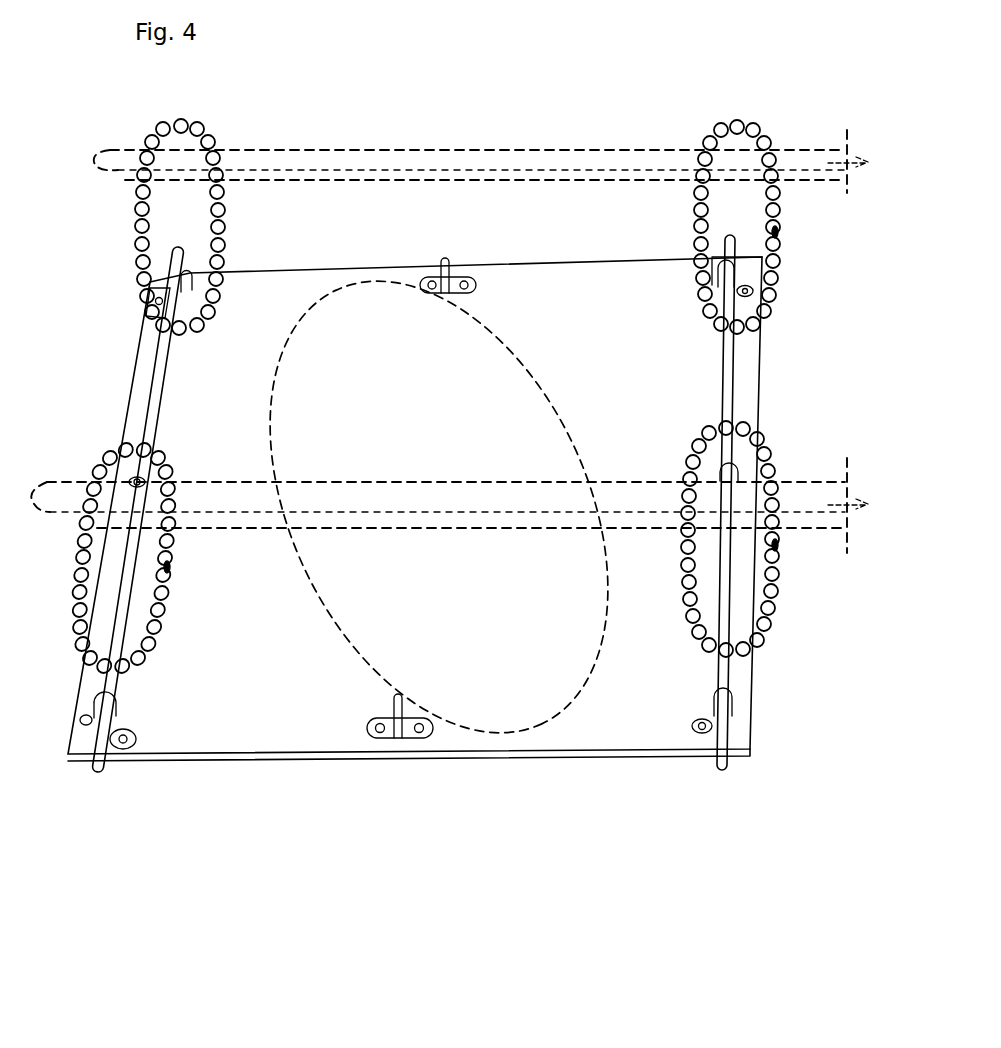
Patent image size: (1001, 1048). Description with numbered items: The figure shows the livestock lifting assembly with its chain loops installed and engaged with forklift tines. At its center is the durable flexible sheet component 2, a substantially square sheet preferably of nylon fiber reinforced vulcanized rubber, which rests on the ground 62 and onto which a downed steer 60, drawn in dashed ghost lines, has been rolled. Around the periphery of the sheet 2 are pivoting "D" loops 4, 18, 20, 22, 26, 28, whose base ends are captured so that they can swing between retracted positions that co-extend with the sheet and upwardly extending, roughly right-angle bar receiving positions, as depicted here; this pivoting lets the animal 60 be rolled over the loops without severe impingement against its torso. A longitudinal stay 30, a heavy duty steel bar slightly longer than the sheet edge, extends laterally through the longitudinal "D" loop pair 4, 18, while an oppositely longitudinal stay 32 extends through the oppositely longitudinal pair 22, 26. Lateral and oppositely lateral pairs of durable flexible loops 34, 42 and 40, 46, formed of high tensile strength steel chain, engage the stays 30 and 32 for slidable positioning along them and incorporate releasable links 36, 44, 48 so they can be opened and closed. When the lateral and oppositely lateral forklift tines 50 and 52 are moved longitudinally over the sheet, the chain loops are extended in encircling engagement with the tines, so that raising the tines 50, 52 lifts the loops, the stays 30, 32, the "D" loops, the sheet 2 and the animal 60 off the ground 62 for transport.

The durable flexible sheet component 2 is at (312, 688).
The "D" loop 4 is at (110, 757).
The "D" loop 18 is at (192, 283).
The "D" loop 20 is at (470, 266).
The "D" loop 22 is at (773, 272).
The "D" loop 26 is at (735, 690).
The "D" loop 28 is at (432, 734).
The longitudinal stay 30 is at (108, 758).
The oppositely longitudinal stay 32 is at (740, 363).
The durable flexible loop 34 is at (108, 455).
The releasable link 36 is at (170, 567).
The durable flexible loop 40 is at (208, 125).
The durable flexible loop 42 is at (690, 598).
The releasable link 44 is at (780, 545).
The durable flexible loop 46 is at (740, 128).
The releasable link 48 is at (780, 232).
The lateral forklift tine 50 is at (487, 515).
The oppositely lateral forklift tine 52 is at (440, 160).
The steer 60 is at (532, 385).
The ground 62 is at (831, 429).